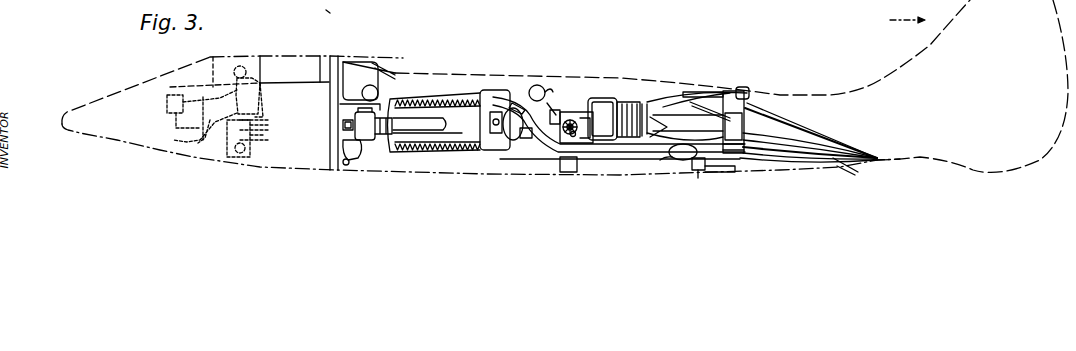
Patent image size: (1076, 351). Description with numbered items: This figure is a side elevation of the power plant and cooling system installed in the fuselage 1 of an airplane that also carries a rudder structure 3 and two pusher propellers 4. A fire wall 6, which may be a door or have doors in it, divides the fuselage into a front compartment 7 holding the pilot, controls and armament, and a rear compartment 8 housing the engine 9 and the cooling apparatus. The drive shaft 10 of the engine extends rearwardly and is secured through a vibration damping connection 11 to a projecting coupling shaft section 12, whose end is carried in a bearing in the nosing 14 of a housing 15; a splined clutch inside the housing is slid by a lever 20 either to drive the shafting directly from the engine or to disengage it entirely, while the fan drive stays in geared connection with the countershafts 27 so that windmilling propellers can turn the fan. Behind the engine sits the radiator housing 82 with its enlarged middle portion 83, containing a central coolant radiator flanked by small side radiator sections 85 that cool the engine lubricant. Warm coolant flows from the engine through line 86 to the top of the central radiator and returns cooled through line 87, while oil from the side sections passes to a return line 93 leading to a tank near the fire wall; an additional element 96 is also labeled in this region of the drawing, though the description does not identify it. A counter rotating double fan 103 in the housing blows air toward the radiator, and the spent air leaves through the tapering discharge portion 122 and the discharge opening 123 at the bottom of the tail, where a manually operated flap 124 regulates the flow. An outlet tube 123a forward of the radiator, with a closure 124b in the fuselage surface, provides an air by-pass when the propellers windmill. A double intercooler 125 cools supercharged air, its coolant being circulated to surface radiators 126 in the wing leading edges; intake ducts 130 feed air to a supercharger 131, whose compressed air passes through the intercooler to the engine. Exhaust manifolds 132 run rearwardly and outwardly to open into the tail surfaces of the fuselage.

The fuselage 1 is at (531, 0).
The rudder structure 3 is at (900, 22).
The pusher propellers 4 is at (325, 6).
The fire wall 6 is at (329, 60).
The front compartment 7 is at (270, 157).
The rear compartment 8 is at (537, 168).
The engine 9 is at (449, 96).
The drive shaft 10 is at (537, 120).
The vibration damping connection 11 is at (528, 138).
The coupling shaft section 12 is at (549, 87).
The nosing 14 is at (571, 118).
The housing 15 is at (584, 135).
The lever 20 is at (556, 115).
The countershafts 27 is at (574, 136).
The radiator housing 82 is at (660, 107).
The enlarged middle portion 83 is at (698, 105).
The side radiator sections 85 is at (731, 90).
The coolant line 86 is at (700, 98).
The coolant return line 87 is at (700, 165).
The return line 93 is at (744, 93).
The coupling 96 is at (623, 110).
The counter rotating double fan 103 is at (641, 108).
The outlet or discharge portion 122 is at (838, 141).
The discharge opening 123 is at (870, 163).
The outlet tube 123a is at (686, 158).
The manually operated flap 124 is at (842, 168).
The closure 124b is at (720, 170).
The double intercooler 125 is at (363, 140).
The surface radiators 126 is at (367, 57).
The intake ducts 130 is at (341, 128).
The supercharger 131 is at (345, 146).
The exhaust manifolds 132 is at (523, 108).